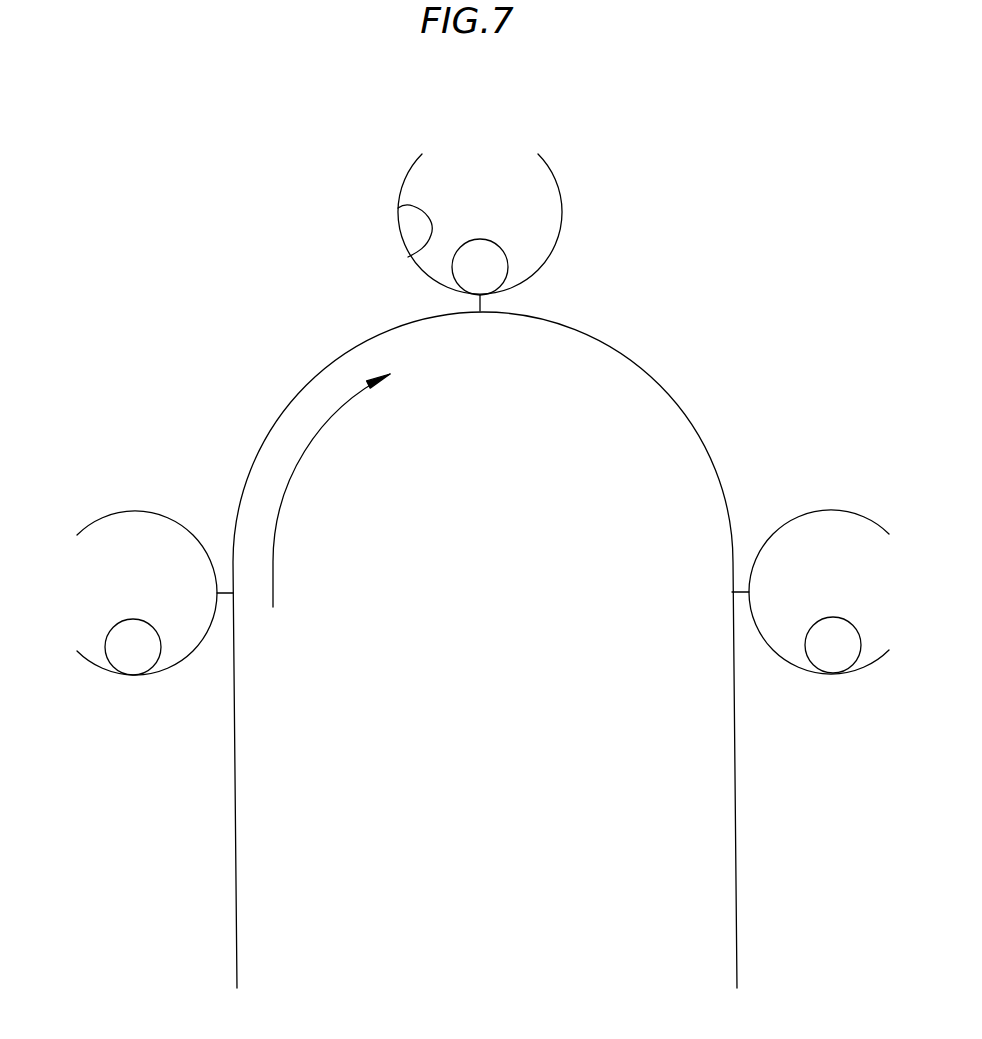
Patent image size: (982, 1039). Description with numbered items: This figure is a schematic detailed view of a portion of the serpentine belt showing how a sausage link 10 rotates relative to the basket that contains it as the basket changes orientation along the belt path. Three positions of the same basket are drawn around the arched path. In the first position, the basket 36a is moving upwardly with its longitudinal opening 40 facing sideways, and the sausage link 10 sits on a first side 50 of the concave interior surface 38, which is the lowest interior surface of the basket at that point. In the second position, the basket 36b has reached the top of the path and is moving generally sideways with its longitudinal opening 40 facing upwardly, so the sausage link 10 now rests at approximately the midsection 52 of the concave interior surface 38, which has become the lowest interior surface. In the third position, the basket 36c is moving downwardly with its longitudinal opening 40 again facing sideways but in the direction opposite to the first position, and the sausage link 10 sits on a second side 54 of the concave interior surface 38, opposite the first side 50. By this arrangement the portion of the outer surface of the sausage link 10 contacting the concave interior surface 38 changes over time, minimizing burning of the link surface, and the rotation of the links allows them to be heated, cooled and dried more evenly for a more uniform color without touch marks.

The sausage link 10 is at (490, 268).
The basket in first position 36a is at (127, 511).
The basket in second position 36b is at (562, 234).
The basket in third position 36c is at (837, 510).
The concave interior surface 38 is at (398, 208).
The longitudinal opening 40 is at (95, 587).
The first side 50 is at (130, 675).
The midsection 52 is at (480, 295).
The second side 54 is at (833, 673).